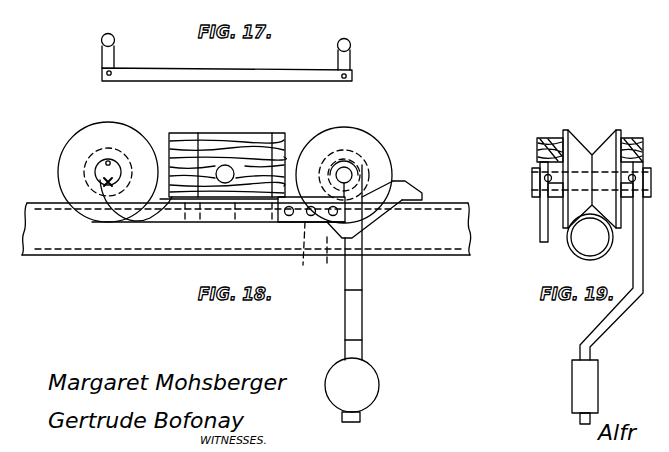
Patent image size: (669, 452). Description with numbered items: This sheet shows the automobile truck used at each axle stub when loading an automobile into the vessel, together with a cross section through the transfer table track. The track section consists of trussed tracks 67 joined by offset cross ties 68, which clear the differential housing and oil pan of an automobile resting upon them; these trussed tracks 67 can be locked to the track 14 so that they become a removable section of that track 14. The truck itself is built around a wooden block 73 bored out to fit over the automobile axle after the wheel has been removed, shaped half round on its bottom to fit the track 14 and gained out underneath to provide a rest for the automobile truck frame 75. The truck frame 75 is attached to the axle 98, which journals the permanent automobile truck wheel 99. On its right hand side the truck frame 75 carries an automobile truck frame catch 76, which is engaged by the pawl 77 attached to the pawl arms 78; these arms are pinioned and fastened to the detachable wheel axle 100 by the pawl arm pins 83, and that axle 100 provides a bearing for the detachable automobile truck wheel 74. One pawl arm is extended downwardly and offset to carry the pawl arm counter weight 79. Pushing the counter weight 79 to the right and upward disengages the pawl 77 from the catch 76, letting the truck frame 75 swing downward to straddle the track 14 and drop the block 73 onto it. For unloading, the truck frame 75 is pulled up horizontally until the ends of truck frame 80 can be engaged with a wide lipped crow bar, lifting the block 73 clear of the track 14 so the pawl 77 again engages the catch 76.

In FIG. 18, the track 14 is at (50, 242).
In FIG. 19, the track 14 is at (572, 260).
In FIG. 17, the trussed tracks 67 is at (116, 36).
In FIG. 17, the cross ties 68 is at (347, 62).
In FIG. 18, the wooden block 73 is at (215, 132).
In FIG. 18, the detachable automobile truck wheel 74 is at (392, 172).
In FIG. 19, the detachable automobile truck wheel 74 is at (608, 150).
In FIG. 18, the automobile truck frame 75 is at (152, 213).
In FIG. 19, the automobile truck frame 75 is at (566, 250).
In FIG. 18, the automobile truck frame catch 76 is at (298, 224).
In FIG. 18, the pawl 77 is at (341, 228).
In FIG. 18, the pawl arms 78 is at (366, 185).
In FIG. 18, the pawl arm counter weight 79 is at (365, 387).
In FIG. 19, the pawl arm counter weight 79 is at (592, 393).
In FIG. 18, the ends of truck frame 80 is at (422, 190).
In FIG. 19, the pawl arm pins 83 is at (551, 138).
In FIG. 18, the axle 98 is at (103, 167).
In FIG. 18, the permanent automobile truck wheel 99 is at (120, 140).
In FIG. 18, the detachable wheel axle 100 is at (350, 168).